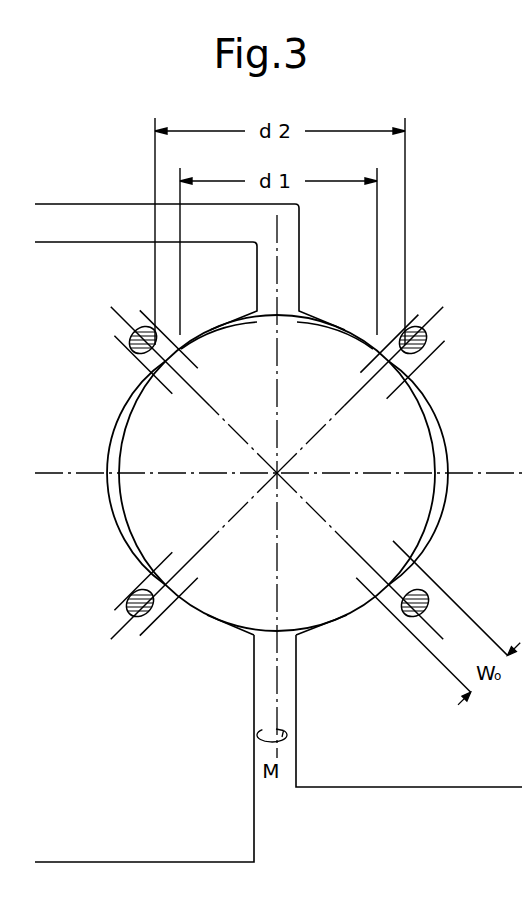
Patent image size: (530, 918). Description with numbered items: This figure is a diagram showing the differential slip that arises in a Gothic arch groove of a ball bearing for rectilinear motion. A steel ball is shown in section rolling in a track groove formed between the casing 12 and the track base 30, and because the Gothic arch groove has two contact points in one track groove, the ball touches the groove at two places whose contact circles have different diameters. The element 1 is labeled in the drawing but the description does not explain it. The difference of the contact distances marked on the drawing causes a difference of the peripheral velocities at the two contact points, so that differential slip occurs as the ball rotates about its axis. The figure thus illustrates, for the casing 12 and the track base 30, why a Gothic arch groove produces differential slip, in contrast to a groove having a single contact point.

The tool body 1 is at (435, 427).
The casing 12 is at (387, 780).
The track base 30 is at (147, 856).